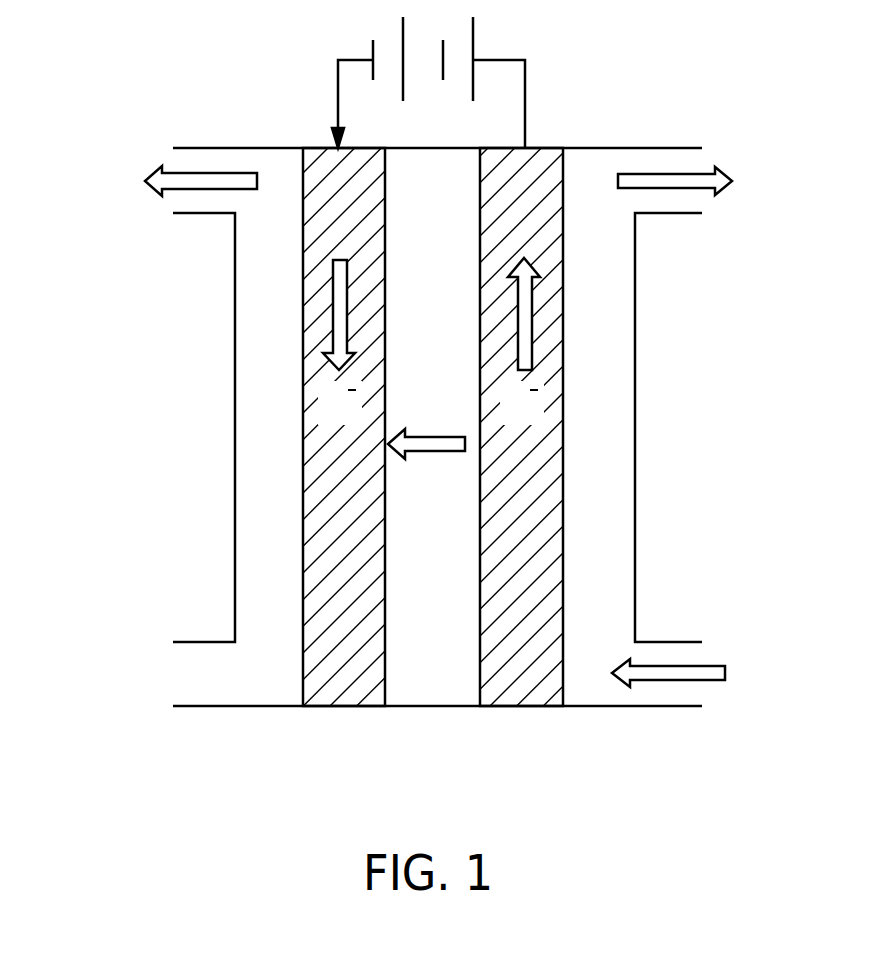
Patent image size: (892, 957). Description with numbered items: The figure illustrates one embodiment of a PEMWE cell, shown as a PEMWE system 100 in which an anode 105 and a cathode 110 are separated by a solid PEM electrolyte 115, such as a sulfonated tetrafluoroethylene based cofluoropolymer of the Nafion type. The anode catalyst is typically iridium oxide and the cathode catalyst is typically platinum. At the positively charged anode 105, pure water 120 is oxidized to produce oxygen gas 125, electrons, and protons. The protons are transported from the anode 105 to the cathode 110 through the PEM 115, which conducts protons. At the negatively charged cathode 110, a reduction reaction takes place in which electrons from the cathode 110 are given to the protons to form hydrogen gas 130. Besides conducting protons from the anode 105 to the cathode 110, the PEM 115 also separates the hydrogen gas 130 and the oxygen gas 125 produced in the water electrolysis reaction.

The PEMWE system 100 is at (158, 94).
The anode 105 is at (520, 706).
The cathode 110 is at (346, 706).
The solid PEM electrolyte 115 is at (438, 706).
The pure water 120 is at (710, 664).
The oxygen gas 125 is at (718, 168).
The hydrogen gas 130 is at (160, 170).